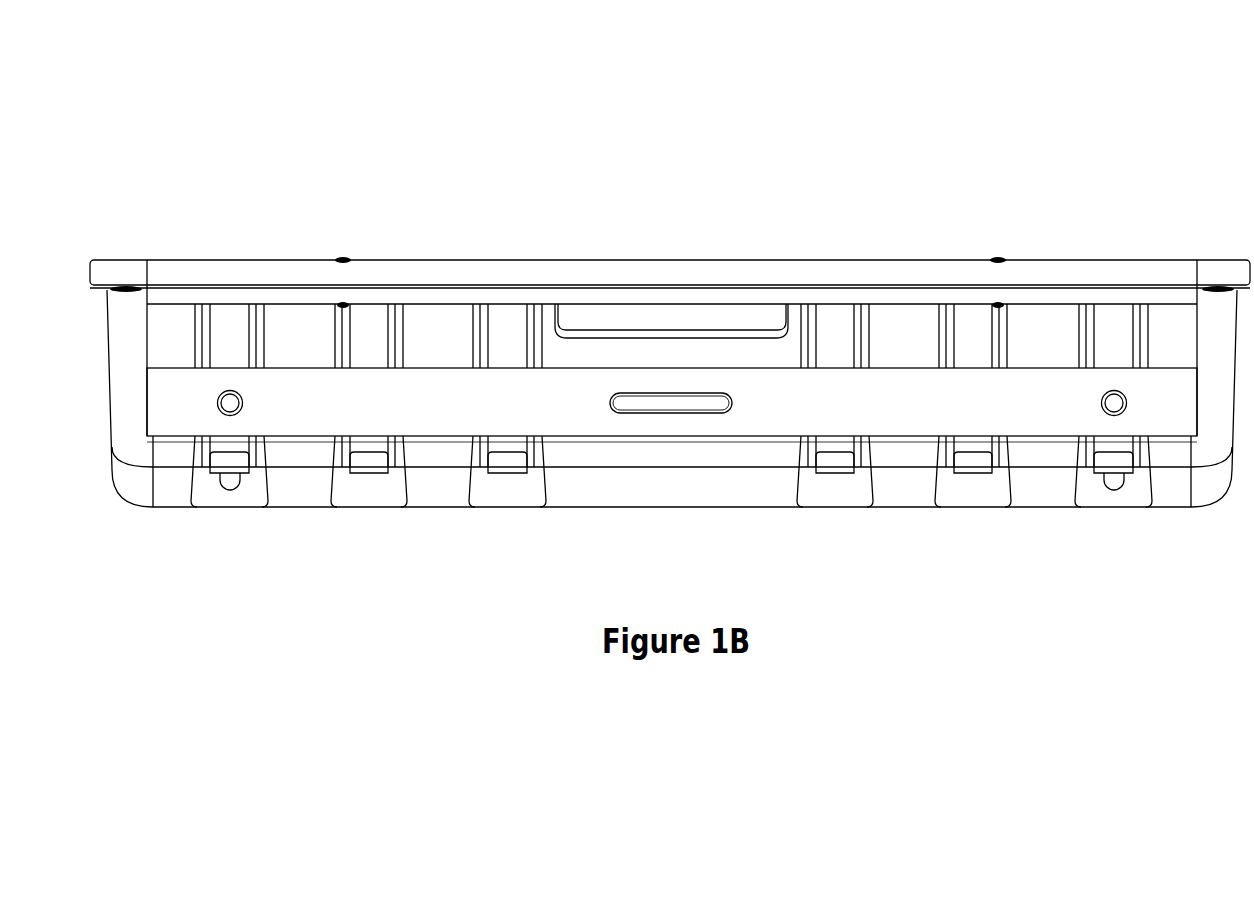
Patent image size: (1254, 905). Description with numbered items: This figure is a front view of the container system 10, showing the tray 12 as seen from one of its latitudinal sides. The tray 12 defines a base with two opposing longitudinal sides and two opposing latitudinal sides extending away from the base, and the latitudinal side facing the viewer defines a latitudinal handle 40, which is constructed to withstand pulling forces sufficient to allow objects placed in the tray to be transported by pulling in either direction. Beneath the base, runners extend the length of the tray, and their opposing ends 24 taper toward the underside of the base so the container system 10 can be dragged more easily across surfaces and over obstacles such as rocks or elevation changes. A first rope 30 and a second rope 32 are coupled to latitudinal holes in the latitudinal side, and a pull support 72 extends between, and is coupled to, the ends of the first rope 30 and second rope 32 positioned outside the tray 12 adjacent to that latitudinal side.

The container system 10 is at (328, 92).
The tray 12 is at (207, 243).
The opposing ends 24 is at (435, 452).
The first rope 30 is at (233, 488).
The second rope 32 is at (1117, 488).
The latitudinal handle 40 is at (636, 318).
The pull support 72 is at (601, 406).